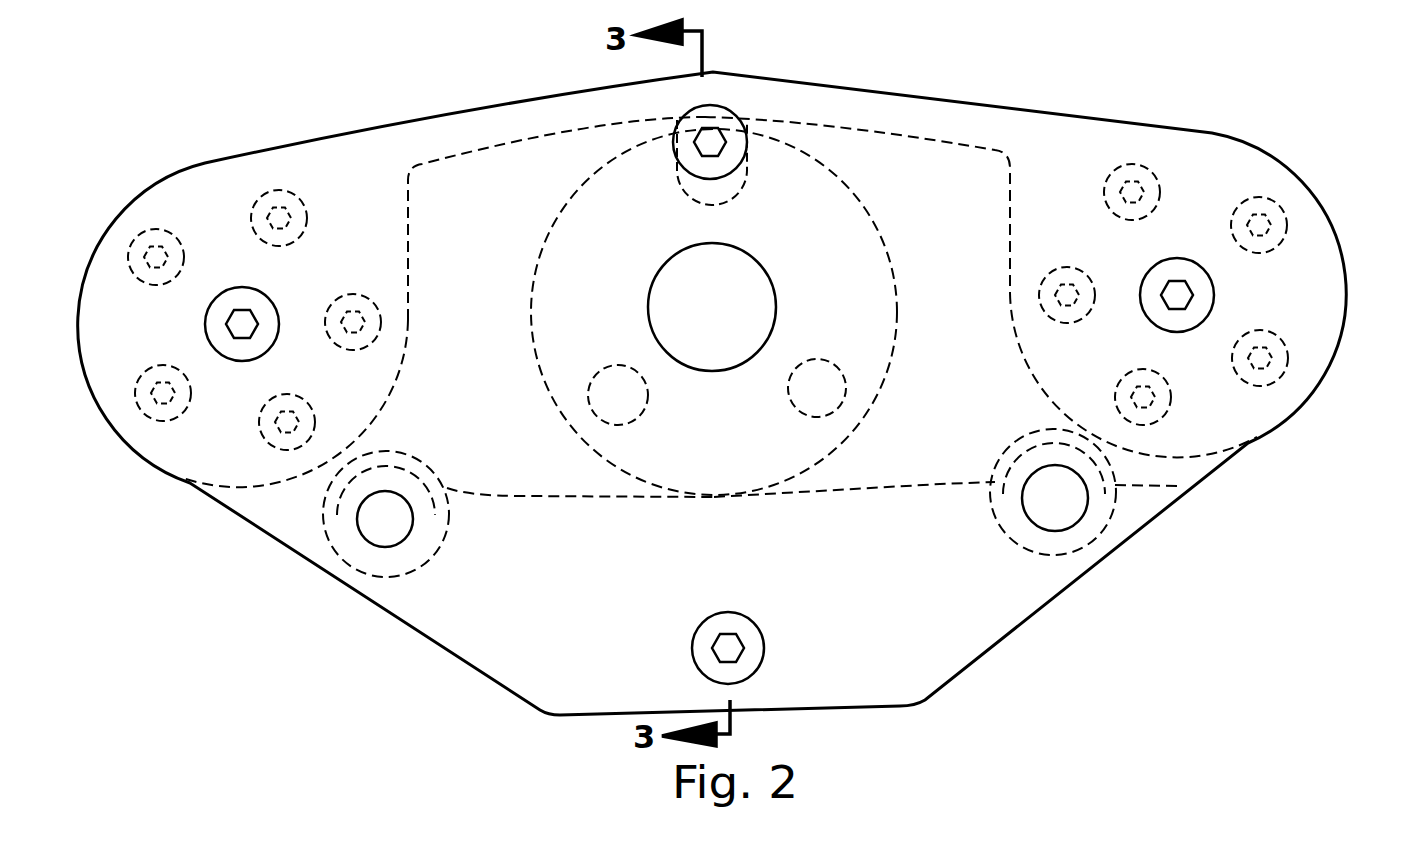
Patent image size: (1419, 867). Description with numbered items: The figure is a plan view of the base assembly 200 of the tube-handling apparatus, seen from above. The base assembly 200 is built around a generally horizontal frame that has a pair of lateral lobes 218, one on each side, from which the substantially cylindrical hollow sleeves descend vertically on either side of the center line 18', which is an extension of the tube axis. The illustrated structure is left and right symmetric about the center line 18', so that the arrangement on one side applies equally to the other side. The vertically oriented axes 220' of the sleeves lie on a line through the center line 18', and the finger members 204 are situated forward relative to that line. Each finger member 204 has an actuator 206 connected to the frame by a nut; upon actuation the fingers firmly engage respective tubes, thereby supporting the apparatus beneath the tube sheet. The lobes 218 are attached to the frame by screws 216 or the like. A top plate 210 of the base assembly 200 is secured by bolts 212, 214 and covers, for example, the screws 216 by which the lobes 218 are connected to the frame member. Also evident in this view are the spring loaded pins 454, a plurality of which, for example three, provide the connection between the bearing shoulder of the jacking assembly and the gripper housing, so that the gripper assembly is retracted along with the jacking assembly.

The base assembly 200 is at (970, 98).
The top plate 210 is at (407, 145).
The lateral lobes 218 is at (1103, 150).
The actuator 206 is at (1180, 487).
The center line 18' is at (719, 257).
The finger member 204 is at (1088, 510).
The axes of the sleeves 220' is at (746, 243).
The bolt 214 is at (730, 110).
The spring loaded pins 454 is at (683, 183).
The bolt 212 is at (743, 658).
The screws 216 is at (167, 420).